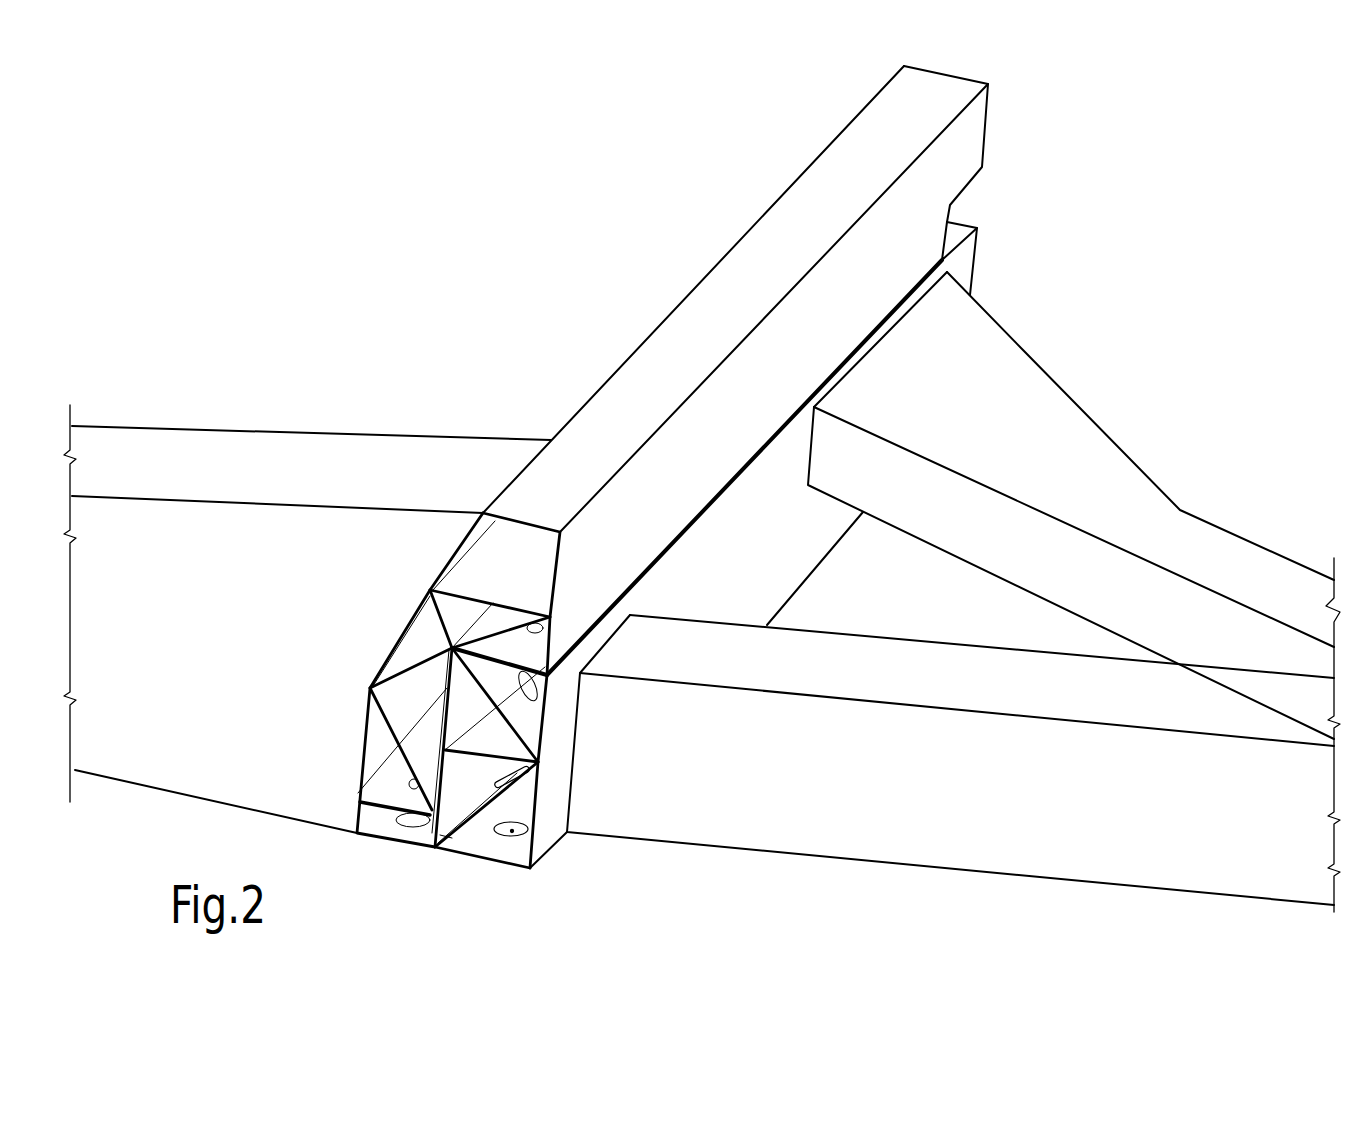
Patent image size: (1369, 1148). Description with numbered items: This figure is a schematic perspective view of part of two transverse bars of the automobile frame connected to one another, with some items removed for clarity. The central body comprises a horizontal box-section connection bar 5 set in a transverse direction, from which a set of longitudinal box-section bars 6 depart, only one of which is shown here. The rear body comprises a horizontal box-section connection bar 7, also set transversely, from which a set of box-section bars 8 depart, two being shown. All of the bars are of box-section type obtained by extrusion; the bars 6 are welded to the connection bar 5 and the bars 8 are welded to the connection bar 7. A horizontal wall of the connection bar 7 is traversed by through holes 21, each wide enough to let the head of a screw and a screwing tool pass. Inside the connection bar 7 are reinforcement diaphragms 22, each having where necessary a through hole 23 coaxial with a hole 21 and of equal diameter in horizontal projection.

The connection bar 5 is at (663, 274).
The box-section bars 6 is at (307, 448).
The connection bar 7 is at (573, 848).
The box-section bars 8 is at (1242, 552).
The through holes 21 is at (510, 833).
The reinforcement diaphragms 22 is at (453, 838).
The through hole 23 is at (521, 782).